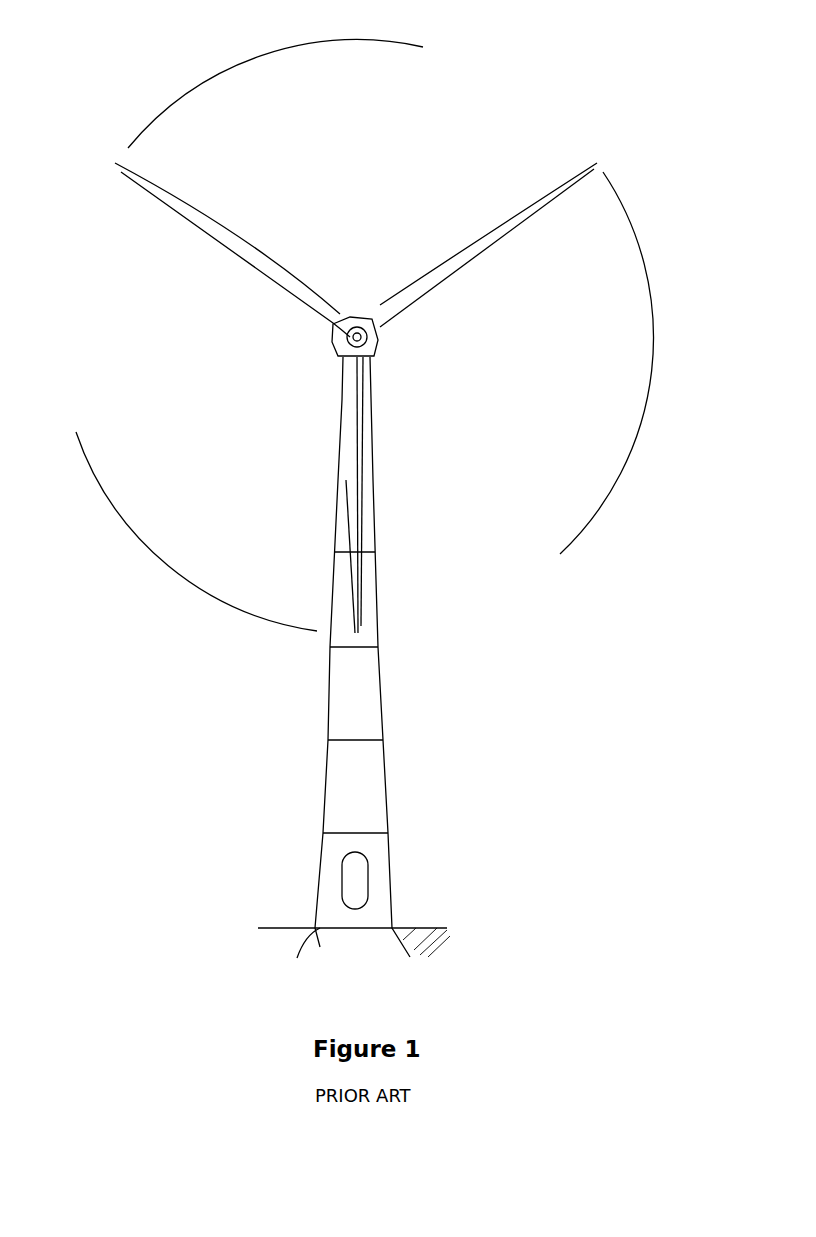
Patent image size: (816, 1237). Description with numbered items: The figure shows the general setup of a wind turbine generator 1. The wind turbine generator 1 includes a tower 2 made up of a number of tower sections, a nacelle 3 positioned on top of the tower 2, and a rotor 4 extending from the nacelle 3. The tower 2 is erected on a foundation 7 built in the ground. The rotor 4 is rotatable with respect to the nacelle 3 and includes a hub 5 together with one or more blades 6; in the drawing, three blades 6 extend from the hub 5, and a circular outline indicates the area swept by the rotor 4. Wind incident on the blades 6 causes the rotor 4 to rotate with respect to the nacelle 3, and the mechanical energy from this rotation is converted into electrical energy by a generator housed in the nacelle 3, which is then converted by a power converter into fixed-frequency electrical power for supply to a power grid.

The wind turbine generator 1 is at (146, 702).
The tower 2 is at (385, 770).
The nacelle 3 is at (378, 350).
The rotor 4 is at (375, 335).
The hub 5 is at (358, 343).
The blades 6 is at (432, 287).
The foundation 7 is at (318, 945).